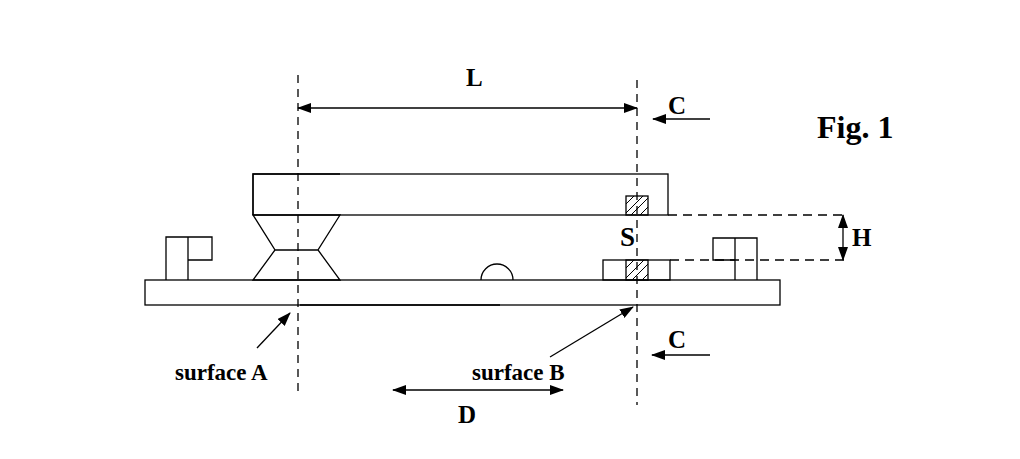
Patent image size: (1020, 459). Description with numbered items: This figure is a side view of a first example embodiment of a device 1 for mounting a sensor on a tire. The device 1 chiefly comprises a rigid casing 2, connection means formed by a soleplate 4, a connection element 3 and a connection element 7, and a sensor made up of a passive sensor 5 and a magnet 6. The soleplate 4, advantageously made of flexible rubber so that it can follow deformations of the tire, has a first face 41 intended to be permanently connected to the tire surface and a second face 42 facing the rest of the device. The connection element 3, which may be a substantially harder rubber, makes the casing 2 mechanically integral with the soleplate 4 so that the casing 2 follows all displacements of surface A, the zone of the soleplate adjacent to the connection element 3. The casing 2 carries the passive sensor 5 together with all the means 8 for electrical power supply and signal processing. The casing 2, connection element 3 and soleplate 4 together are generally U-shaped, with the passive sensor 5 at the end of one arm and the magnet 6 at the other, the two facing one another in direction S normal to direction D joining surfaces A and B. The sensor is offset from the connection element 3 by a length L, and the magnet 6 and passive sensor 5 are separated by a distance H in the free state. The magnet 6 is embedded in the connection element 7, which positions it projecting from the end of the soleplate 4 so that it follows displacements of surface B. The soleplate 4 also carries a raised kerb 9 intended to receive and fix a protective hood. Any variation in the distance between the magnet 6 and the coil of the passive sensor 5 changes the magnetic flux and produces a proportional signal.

The device 1 is at (170, 133).
The rigid casing 2 is at (284, 188).
The connection element for the casing 3 is at (290, 222).
The soleplate 4 is at (187, 292).
The passive sensor 5 is at (648, 198).
The magnet 6 is at (650, 274).
The connection element for the magnet 7 is at (657, 270).
The means for electrical power supply and signal processing 8 is at (508, 195).
The raised kerb 9 is at (175, 257).
The first face of the soleplate 41 is at (403, 305).
The second face of the soleplate 42 is at (483, 272).